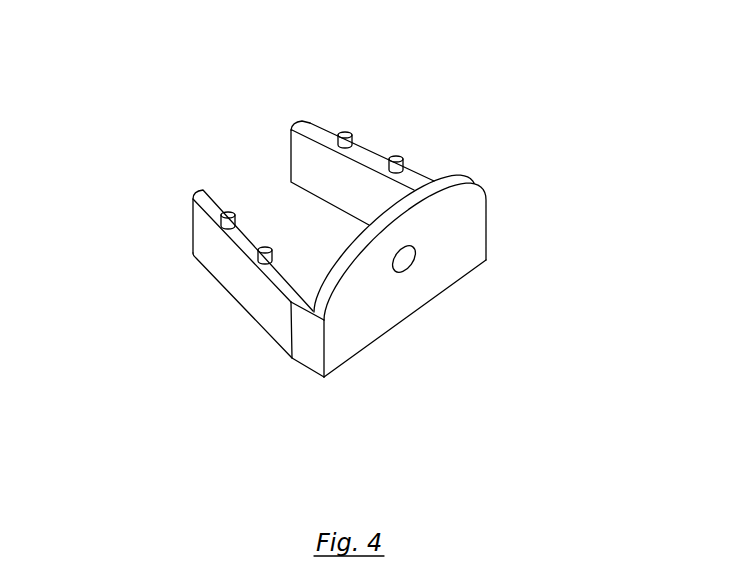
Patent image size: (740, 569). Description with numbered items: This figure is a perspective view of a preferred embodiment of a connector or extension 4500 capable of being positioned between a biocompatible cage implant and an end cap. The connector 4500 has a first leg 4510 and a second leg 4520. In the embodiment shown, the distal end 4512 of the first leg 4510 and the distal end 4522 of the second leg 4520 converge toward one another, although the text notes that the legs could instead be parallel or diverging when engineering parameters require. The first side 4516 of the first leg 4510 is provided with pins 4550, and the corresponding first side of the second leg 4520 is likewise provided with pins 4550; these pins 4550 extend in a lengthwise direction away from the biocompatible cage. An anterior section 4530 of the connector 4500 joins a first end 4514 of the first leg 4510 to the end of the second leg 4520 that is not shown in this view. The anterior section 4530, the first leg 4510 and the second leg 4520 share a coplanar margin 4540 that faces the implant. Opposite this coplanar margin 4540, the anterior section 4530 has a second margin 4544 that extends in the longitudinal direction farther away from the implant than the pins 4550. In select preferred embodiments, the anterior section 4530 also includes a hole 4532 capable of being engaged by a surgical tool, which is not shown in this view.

The connector or extension 4500 is at (207, 100).
The first leg 4510 is at (230, 295).
The distal end of first leg 4512 is at (169, 274).
The first end of first leg 4514 is at (291, 358).
The first side of first leg 4516 is at (240, 254).
The second leg 4520 is at (320, 115).
The distal end of second leg 4522 is at (297, 120).
The anterior section 4530 is at (459, 314).
The hole 4532 is at (413, 270).
The coplanar margin 4540 is at (414, 316).
The second margin 4544 is at (406, 214).
The pins 4550 is at (233, 210).